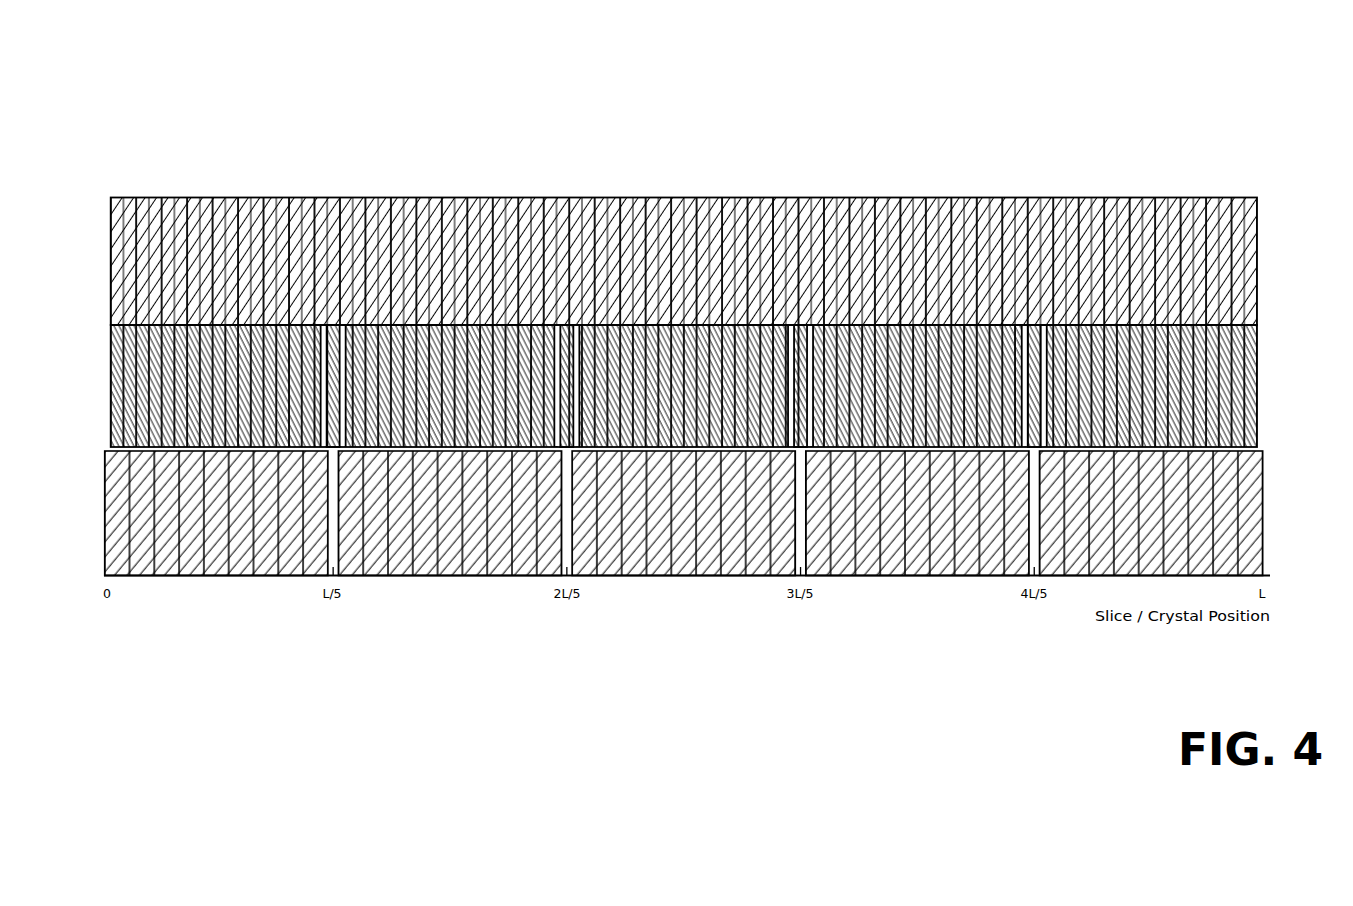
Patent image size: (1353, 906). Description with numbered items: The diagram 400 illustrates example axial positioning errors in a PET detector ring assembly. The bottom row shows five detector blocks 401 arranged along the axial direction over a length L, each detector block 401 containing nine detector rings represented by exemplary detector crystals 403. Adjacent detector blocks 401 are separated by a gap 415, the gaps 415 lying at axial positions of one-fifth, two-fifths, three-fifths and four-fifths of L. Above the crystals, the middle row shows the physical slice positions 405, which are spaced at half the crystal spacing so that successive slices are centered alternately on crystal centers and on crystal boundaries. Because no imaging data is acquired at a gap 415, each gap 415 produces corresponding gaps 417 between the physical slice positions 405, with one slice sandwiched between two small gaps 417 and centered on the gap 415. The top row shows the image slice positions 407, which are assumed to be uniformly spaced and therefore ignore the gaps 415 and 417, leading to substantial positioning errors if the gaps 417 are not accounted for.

The diagram 400 is at (1273, 108).
The detector block 401 is at (226, 596).
The detector crystal 403 is at (717, 551).
The physical slice position 405 is at (696, 384).
The image slice position 407 is at (1265, 257).
The gap 415 is at (330, 606).
The gap 417 is at (335, 377).